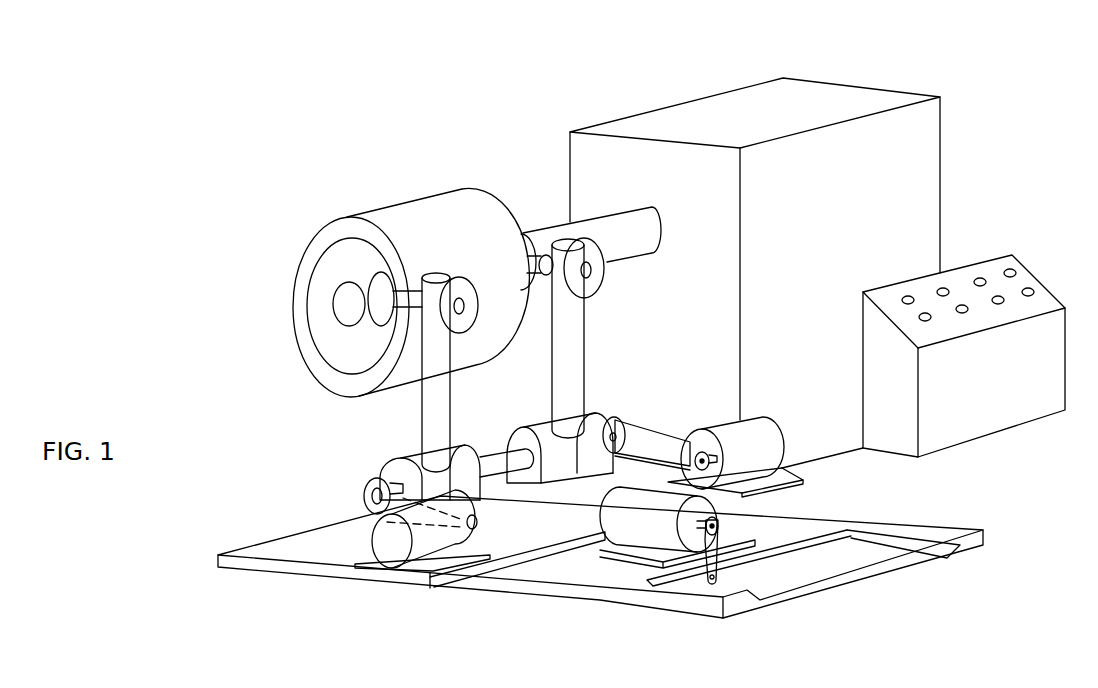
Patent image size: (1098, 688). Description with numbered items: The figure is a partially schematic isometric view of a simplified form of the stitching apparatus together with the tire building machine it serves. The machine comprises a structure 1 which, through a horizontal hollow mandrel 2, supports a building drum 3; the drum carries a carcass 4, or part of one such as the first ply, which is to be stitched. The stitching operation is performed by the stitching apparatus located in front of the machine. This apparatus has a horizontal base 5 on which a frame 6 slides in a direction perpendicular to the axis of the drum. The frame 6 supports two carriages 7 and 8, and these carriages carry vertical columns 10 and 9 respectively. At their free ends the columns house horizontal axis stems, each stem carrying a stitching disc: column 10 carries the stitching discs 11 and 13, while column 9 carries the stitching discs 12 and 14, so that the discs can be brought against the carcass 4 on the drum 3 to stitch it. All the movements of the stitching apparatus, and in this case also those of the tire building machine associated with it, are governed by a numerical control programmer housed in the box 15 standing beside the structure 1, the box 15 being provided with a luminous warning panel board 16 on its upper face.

The structure 1 is at (728, 105).
The horizontal hollow mandrel 2 is at (547, 237).
The building drum 3 is at (453, 180).
The carcass 4 is at (420, 213).
The horizontal base 5 is at (602, 594).
The frame 6 is at (547, 543).
The carriage 7 is at (387, 462).
The carriage 8 is at (603, 412).
The vertical column 9 is at (562, 394).
The vertical column 10 is at (440, 420).
The stitching disc 11 is at (380, 327).
The stitching disc 12 is at (528, 292).
The stitching disc 13 is at (469, 333).
The stitching disc 14 is at (605, 285).
The box 15 is at (1012, 338).
The luminous warning panel board 16 is at (1013, 272).